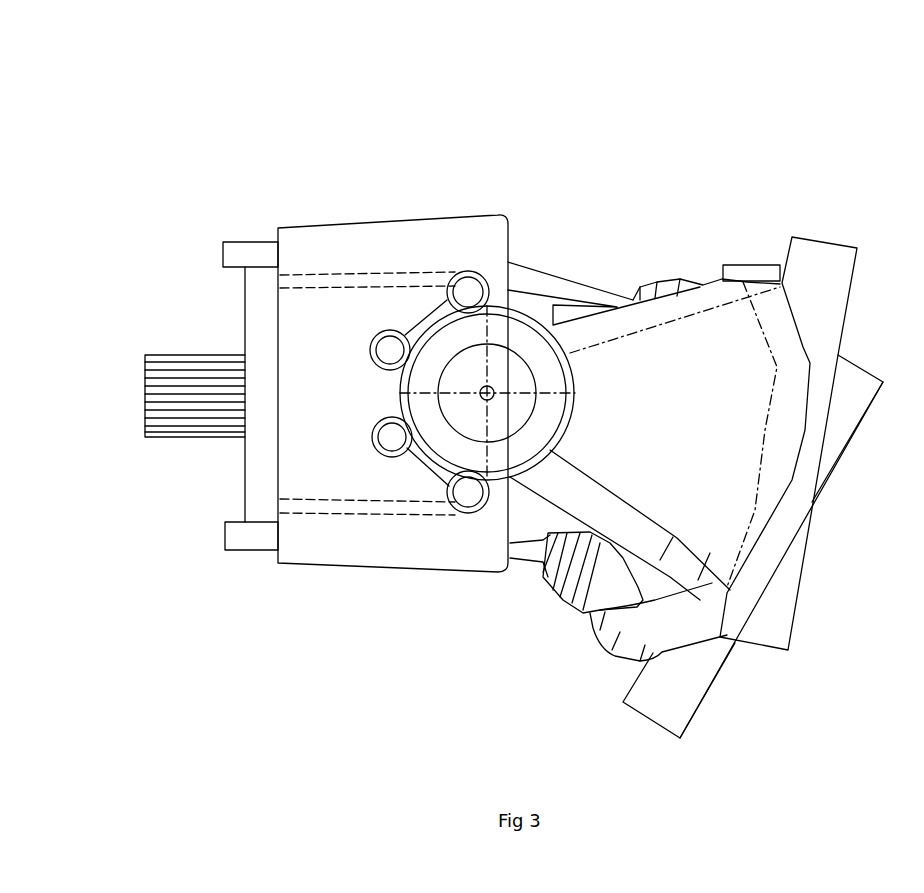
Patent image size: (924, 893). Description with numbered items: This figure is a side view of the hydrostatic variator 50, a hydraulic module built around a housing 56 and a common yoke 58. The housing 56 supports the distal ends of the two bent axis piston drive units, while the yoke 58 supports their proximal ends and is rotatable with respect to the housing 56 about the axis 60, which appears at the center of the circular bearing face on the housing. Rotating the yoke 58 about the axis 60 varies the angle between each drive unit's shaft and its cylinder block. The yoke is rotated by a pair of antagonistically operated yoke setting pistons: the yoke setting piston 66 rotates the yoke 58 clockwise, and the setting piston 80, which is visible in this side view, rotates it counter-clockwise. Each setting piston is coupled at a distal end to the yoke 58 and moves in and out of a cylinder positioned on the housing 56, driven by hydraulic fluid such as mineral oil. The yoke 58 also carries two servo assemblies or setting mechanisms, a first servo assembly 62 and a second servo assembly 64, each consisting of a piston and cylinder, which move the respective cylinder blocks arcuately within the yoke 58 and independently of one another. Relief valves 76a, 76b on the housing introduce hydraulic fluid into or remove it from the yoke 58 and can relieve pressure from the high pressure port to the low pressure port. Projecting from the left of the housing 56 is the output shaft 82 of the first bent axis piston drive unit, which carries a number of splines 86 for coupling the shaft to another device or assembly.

The hydrostatic variator 50 is at (156, 96).
The housing 56 is at (313, 363).
The yoke 58 is at (707, 353).
The axis 60 is at (485, 391).
The first servo assembly 62 is at (773, 597).
The second servo assembly 64 is at (688, 675).
The yoke setting piston 66 is at (508, 262).
The relief valve 76a is at (647, 660).
The relief valve 76b is at (740, 280).
The setting piston 80 is at (518, 560).
The output shaft 82 is at (170, 440).
The splines 86 is at (150, 352).